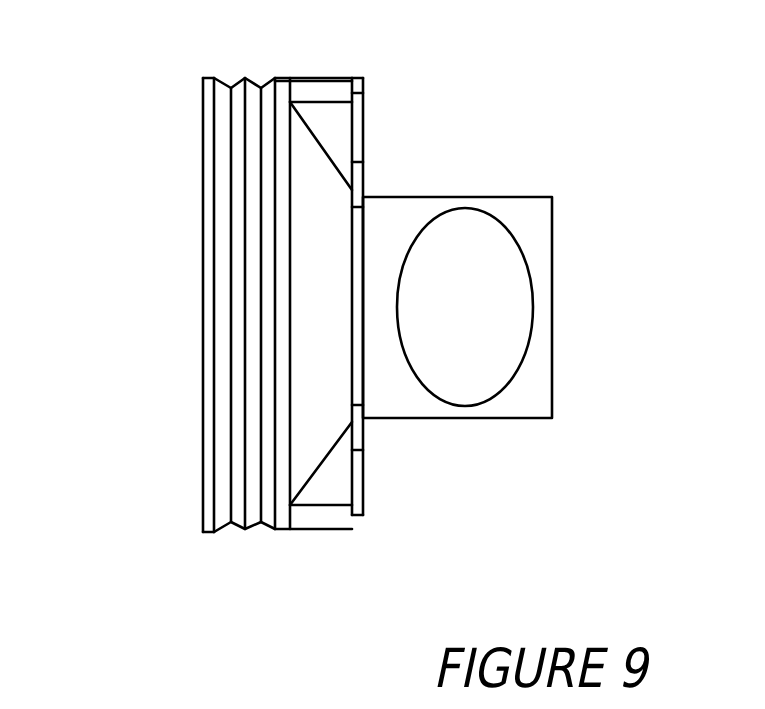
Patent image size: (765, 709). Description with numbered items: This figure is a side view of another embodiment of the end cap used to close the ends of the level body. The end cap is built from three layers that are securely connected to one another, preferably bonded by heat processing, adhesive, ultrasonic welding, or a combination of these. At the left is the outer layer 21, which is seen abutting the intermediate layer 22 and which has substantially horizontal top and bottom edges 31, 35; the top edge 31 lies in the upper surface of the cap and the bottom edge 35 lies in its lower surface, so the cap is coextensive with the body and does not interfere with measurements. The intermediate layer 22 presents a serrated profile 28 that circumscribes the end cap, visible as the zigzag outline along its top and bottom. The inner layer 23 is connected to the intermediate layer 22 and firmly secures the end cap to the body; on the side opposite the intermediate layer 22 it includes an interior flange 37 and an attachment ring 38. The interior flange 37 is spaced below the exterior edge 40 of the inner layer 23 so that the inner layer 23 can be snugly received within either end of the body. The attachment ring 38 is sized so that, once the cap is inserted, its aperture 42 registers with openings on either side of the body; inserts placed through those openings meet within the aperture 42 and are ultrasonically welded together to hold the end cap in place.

The outer layer 21 is at (205, 108).
The top edge 31 is at (211, 76).
The serrated profile 28 is at (247, 77).
The intermediate layer 22 is at (237, 507).
The bottom edge 35 is at (204, 531).
The inner layer 23 is at (333, 472).
The exterior edge 40 is at (357, 78).
The interior flange 37 is at (363, 93).
The attachment ring 38 is at (542, 215).
The aperture 42 is at (510, 310).